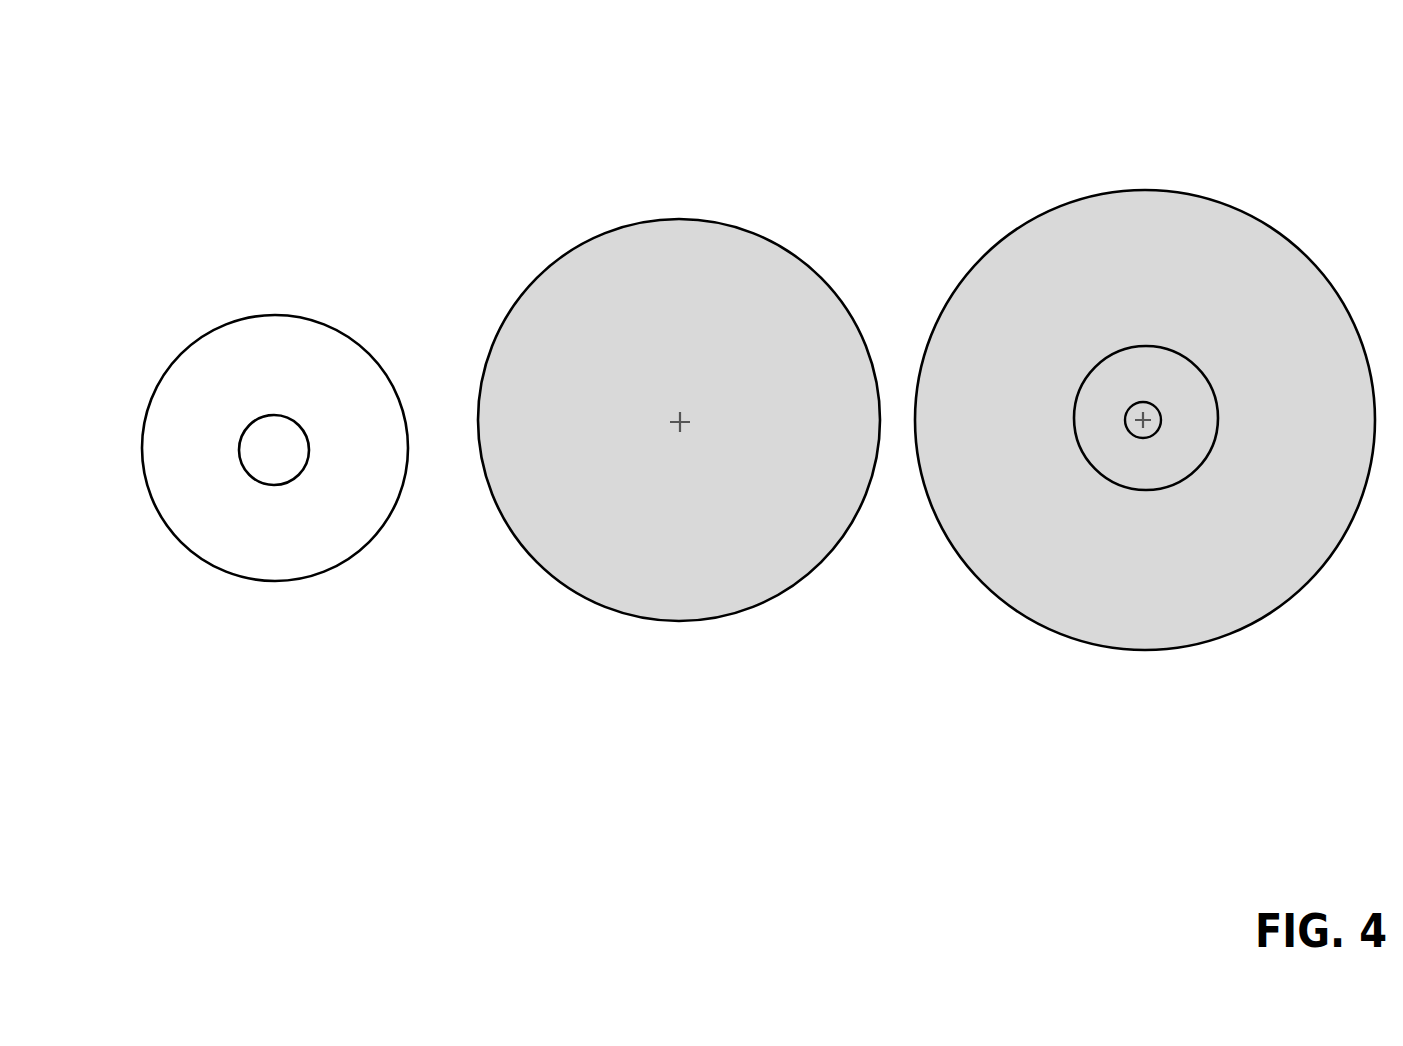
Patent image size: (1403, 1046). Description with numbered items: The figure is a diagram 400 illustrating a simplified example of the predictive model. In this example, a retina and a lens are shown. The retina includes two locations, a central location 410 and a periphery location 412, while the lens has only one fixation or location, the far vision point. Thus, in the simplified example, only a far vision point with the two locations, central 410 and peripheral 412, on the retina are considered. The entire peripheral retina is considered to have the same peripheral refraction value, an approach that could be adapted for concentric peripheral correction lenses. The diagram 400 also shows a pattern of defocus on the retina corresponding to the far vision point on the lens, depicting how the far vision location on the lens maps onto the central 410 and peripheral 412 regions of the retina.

The diagram 400 is at (197, 95).
The central location 410 is at (274, 450).
The periphery location 412 is at (278, 390).